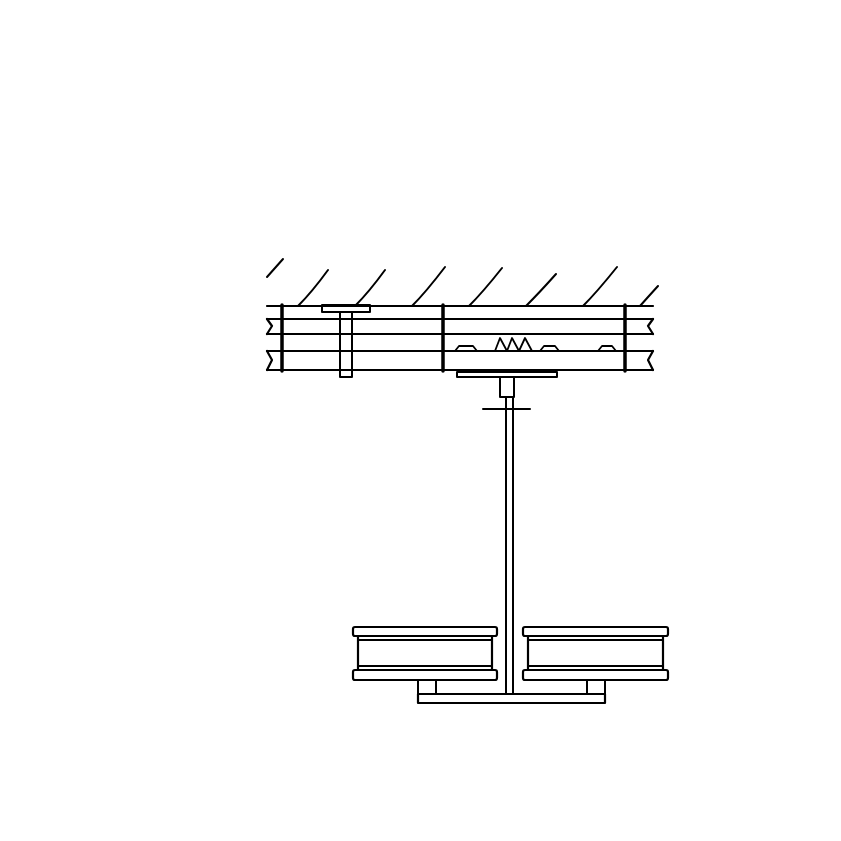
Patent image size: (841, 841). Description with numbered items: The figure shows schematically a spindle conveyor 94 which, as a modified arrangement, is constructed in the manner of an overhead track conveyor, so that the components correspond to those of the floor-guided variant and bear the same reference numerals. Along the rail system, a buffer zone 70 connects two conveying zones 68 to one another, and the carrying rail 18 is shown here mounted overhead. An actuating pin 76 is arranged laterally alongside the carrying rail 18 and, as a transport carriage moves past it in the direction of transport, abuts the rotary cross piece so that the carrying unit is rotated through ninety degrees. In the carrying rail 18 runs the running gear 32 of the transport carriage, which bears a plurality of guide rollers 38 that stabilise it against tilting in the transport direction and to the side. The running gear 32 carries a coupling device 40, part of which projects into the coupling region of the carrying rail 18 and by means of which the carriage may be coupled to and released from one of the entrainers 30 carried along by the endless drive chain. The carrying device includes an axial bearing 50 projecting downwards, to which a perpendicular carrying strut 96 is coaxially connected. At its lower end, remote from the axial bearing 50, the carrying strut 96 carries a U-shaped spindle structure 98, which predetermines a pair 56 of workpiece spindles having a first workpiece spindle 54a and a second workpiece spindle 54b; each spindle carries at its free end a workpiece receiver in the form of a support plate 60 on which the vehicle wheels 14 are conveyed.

The spindle conveyor 94 is at (140, 153).
The buffer zone 70 is at (520, 137).
The conveying zone 68 is at (280, 206).
The carrying rail 18 is at (655, 329).
The actuating pin 76 is at (345, 378).
The running gear 32 is at (495, 343).
The entrainer 30 is at (531, 343).
The coupling device 40 is at (516, 343).
The guide roller 38 is at (605, 346).
The support plate 60 is at (470, 378).
The axial bearing 50 is at (520, 378).
The carrying strut 96 is at (513, 605).
The vehicle wheel 14 is at (398, 652).
The first workpiece spindle 54a is at (605, 688).
The second workpiece spindle 54b is at (418, 687).
The pair of workpiece spindles 56 is at (446, 707).
The U-shaped spindle structure 98 is at (558, 705).